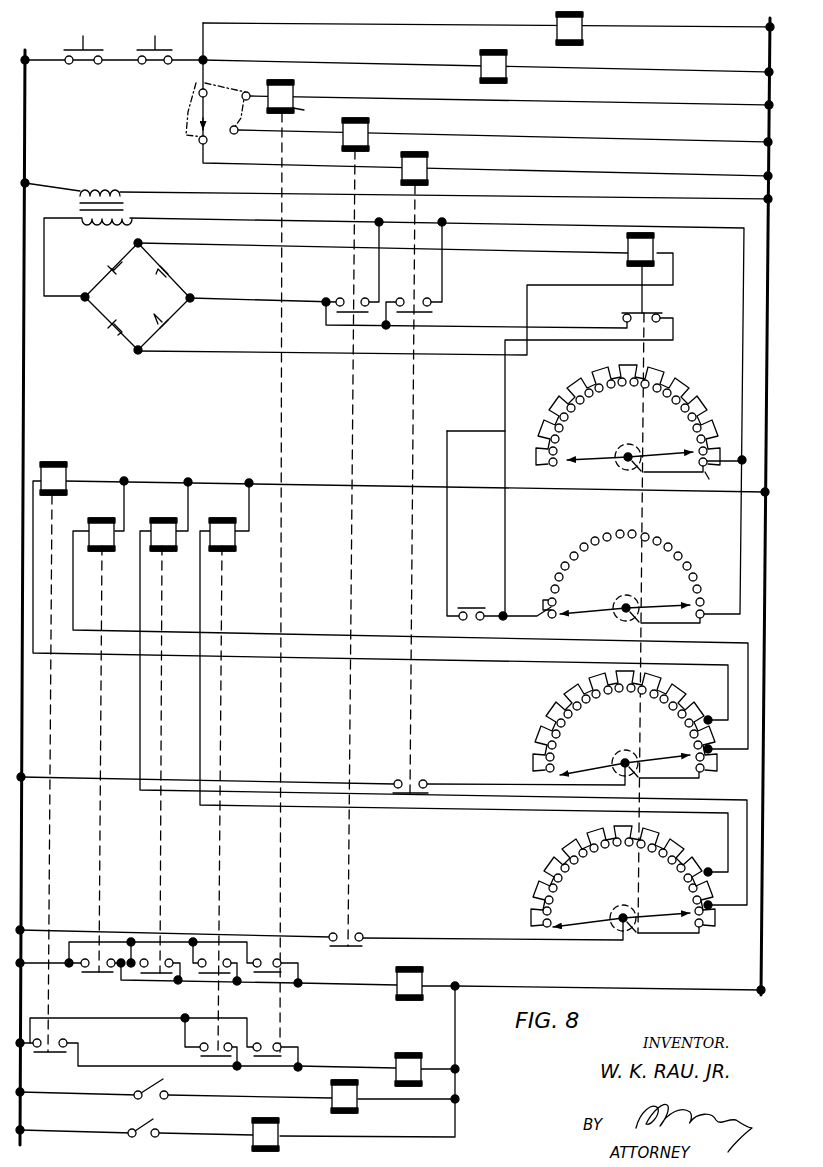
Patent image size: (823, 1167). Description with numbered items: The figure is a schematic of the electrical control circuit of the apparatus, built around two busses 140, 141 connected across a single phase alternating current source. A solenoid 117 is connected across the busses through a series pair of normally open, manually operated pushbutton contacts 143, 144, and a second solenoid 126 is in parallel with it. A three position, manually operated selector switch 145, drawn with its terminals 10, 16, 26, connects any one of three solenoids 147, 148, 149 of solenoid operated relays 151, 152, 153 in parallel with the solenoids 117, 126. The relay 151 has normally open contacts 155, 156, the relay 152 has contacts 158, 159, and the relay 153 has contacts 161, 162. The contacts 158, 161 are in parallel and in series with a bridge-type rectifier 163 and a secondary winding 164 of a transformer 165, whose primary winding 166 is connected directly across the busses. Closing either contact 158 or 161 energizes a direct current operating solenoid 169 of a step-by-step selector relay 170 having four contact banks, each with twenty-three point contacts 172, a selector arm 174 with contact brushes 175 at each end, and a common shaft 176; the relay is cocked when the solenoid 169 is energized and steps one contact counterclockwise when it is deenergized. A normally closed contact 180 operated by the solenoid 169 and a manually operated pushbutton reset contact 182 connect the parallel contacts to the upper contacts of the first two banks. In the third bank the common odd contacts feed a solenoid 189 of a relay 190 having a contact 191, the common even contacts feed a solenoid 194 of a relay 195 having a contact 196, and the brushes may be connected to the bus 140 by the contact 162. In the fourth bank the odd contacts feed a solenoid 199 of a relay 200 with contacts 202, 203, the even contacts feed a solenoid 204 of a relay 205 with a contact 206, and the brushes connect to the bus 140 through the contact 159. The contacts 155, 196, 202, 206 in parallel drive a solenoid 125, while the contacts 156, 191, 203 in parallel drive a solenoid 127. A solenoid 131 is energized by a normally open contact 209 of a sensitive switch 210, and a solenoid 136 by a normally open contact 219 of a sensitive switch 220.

The switch contact 10 is at (194, 121).
The switch contact 16 is at (255, 104).
The switch contact 26 is at (235, 140).
The solenoid 117 is at (582, 36).
The solenoid 125 is at (397, 988).
The solenoid 126 is at (505, 80).
The solenoid 127 is at (396, 1066).
The solenoid 131 is at (358, 1102).
The solenoid 136 is at (280, 1146).
The bus 140 is at (28, 405).
The bus 141 is at (768, 48).
The pushbutton contact 143 is at (100, 34).
The pushbutton contact 144 is at (172, 34).
The selector switch 145 is at (192, 112).
The solenoid 147 is at (295, 104).
The solenoid 148 is at (370, 140).
The solenoid 149 is at (428, 172).
The solenoid operated relay 151 is at (316, 88).
The solenoid operated relay 152 is at (390, 118).
The solenoid operated relay 153 is at (448, 152).
The normally open contact 155 is at (262, 974).
The normally open contact 156 is at (262, 1058).
The normally open contact 158 is at (350, 313).
The normally open contact 159 is at (340, 947).
The normally open contact 161 is at (416, 313).
The normally open contact 162 is at (404, 794).
The bridge-type rectifier 163 is at (172, 276).
The secondary winding 164 is at (90, 232).
The transformer 165 is at (134, 206).
The primary winding 166 is at (120, 187).
The operating solenoid 169 is at (626, 258).
The step-by-step selector relay 170 is at (634, 640).
The point contact 172 is at (706, 586).
The selector arm 174 is at (614, 456).
The contact brush 175 is at (566, 463).
The common shaft 176 is at (648, 358).
The normally closed contact 180 is at (627, 311).
The pushbutton reset contact 182 is at (486, 606).
The solenoid 189 is at (64, 486).
The solenoid operated relay 190 is at (67, 473).
The normally open contact 191 is at (58, 1054).
The solenoid 194 is at (115, 538).
The solenoid operated relay 195 is at (88, 530).
The normally open contact 196 is at (104, 974).
The solenoid 199 is at (234, 538).
The solenoid operated relay 200 is at (236, 500).
The normally open contact 202 is at (208, 974).
The normally open contact 203 is at (224, 1058).
The solenoid 204 is at (175, 538).
The solenoid operated relay 205 is at (172, 500).
The normally open contact 206 is at (164, 974).
The normally open contact 209 is at (155, 1086).
The sensitive switch 210 is at (148, 1092).
The normally open contact 219 is at (152, 1122).
The sensitive switch 220 is at (145, 1134).